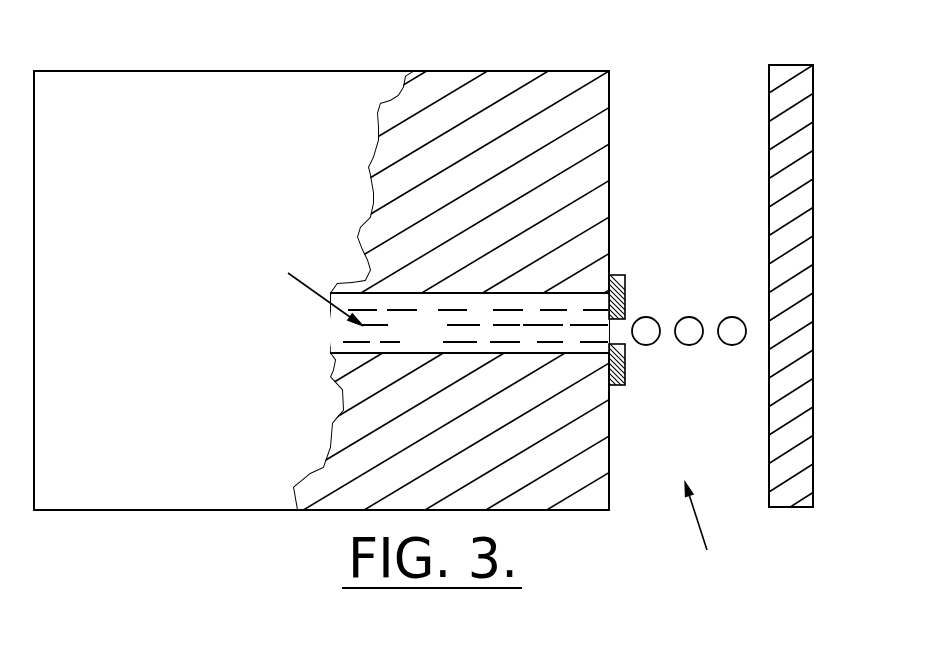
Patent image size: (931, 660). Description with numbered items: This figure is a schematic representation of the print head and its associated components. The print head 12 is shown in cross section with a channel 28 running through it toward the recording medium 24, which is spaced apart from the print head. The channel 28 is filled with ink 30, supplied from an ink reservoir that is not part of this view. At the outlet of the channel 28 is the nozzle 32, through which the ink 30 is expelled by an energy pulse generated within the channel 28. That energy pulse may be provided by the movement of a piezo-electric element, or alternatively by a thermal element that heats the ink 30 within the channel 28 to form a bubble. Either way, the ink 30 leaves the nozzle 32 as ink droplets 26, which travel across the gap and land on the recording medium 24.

The print head 12 is at (140, 95).
The recording medium 24 is at (815, 200).
The ink droplets 26 is at (707, 550).
The channel 28 is at (408, 305).
The ink 30 is at (288, 273).
The nozzle 32 is at (623, 277).